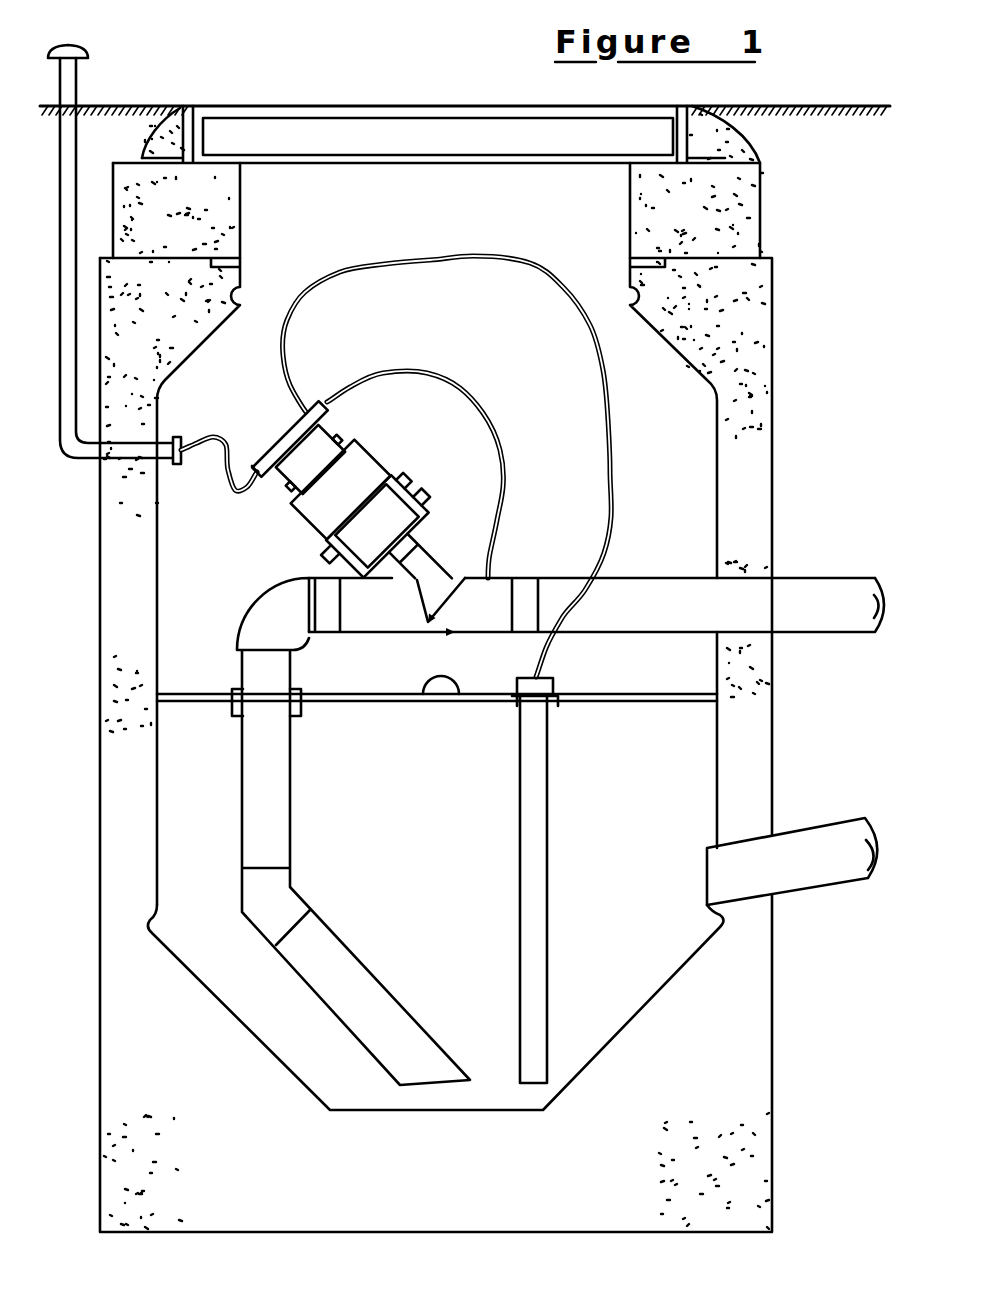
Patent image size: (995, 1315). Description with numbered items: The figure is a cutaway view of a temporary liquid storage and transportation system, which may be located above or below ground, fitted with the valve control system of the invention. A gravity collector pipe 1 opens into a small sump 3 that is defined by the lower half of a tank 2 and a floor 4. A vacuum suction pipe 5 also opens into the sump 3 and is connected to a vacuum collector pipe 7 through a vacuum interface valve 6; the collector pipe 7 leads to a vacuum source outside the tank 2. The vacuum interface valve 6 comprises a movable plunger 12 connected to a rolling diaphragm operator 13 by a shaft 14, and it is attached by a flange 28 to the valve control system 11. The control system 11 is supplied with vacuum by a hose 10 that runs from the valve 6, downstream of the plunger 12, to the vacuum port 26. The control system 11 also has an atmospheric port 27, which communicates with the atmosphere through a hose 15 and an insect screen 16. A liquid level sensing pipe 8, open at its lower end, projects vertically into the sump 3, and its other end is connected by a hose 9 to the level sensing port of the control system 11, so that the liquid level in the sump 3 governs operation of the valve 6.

The gravity collector pipe 1 is at (828, 815).
The tank 2 is at (778, 368).
The sump 3 is at (627, 1022).
The floor 4 is at (458, 698).
The vacuum suction pipe 5 is at (270, 818).
The vacuum interface valve 6 is at (433, 490).
The vacuum collector pipe 7 is at (654, 580).
The liquid level sensing pipe 8 is at (540, 755).
The hose 9 is at (535, 263).
The hose 10 is at (478, 400).
The valve control system 11 is at (275, 415).
The plunger 12 is at (420, 612).
The rolling diaphragm operator 13 is at (377, 460).
The shaft 14 is at (417, 548).
The hose 15 is at (222, 468).
The insect screen 16 is at (90, 55).
The vacuum port 26 is at (320, 394).
The atmospheric port 27 is at (257, 487).
The flange 28 is at (400, 477).